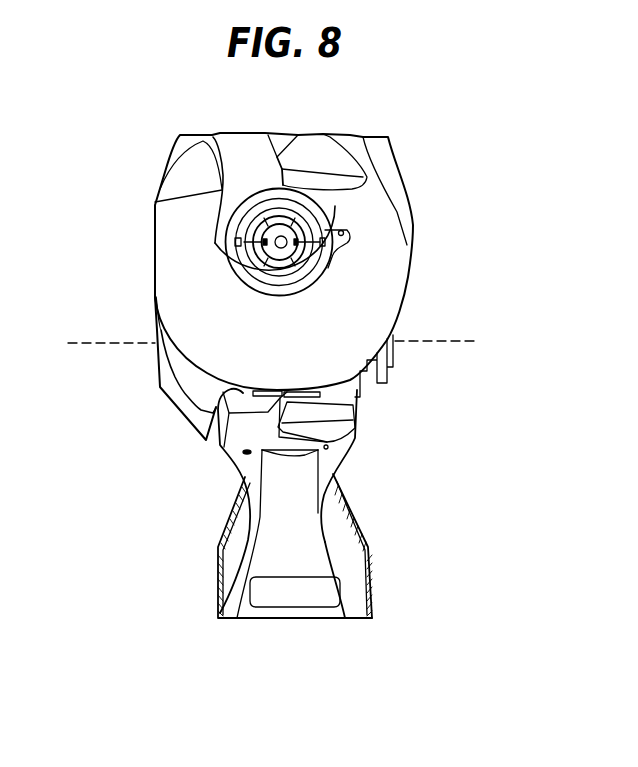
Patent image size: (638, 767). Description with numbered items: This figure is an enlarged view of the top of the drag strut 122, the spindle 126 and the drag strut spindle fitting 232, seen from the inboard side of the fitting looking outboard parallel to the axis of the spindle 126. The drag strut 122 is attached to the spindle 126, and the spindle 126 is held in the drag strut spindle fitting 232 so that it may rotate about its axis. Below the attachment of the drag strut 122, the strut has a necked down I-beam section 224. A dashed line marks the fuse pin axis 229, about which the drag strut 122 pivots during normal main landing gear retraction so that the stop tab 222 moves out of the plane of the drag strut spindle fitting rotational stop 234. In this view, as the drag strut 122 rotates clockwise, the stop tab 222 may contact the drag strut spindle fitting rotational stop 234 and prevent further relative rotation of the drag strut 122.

The drag strut 122 is at (395, 577).
The spindle 126 is at (303, 222).
The stop tab 222 is at (225, 452).
The necked down I-beam section 224 is at (323, 498).
The fuse pin axis 229 is at (88, 346).
The drag strut spindle fitting 232 is at (420, 277).
The drag strut spindle fitting rotational stop 234 is at (181, 400).